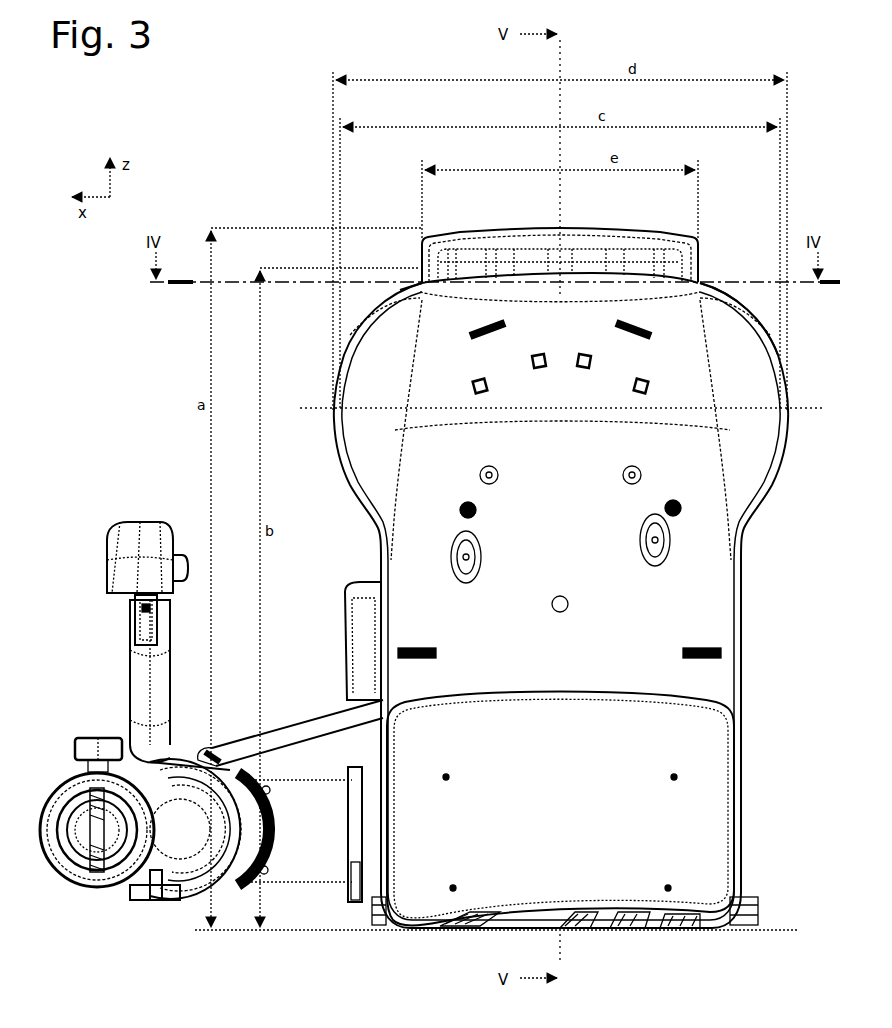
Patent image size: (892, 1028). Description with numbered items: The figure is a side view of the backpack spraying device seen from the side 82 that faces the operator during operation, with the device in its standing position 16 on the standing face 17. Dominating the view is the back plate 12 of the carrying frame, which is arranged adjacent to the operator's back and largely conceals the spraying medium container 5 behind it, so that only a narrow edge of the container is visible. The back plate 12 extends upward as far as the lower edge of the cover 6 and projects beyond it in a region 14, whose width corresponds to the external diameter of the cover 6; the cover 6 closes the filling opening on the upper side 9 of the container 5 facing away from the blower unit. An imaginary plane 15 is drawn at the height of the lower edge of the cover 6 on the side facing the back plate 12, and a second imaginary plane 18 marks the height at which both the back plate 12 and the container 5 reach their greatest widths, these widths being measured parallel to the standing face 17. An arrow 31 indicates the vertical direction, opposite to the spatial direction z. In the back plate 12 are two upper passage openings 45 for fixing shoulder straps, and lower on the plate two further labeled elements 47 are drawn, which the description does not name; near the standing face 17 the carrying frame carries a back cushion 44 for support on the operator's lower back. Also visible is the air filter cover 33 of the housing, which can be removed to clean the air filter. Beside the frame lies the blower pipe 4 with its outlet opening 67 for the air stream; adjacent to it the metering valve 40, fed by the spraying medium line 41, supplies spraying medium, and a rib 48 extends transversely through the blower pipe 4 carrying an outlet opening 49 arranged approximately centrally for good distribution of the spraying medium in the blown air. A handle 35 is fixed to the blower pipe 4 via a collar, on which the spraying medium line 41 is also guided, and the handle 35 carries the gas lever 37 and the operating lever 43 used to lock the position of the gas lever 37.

The blower pipe 4 is at (160, 905).
The spraying medium container 5 is at (345, 322).
The cover 6 is at (612, 230).
The upper side 9 is at (748, 300).
The back plate 12 is at (712, 534).
The region 14 is at (412, 282).
The imaginary plane 15 is at (705, 287).
The standing position 16 is at (192, 158).
The standing face 17 is at (779, 927).
The second imaginary plane 18 is at (320, 405).
The arrow 31 is at (243, 117).
The air filter cover 33 is at (362, 627).
The handle 35 is at (138, 672).
The gas lever 37 is at (135, 618).
The metering valve 40 is at (88, 732).
The spraying medium line 41 is at (322, 728).
The operating lever 43 is at (172, 555).
The back cushion 44 is at (720, 752).
The upper passage openings 45 is at (470, 340).
The grille 47 is at (424, 646).
The rib 48 is at (78, 876).
The outlet opening 49 is at (108, 884).
The outlet opening 67 is at (62, 782).
The side 82 is at (705, 683).